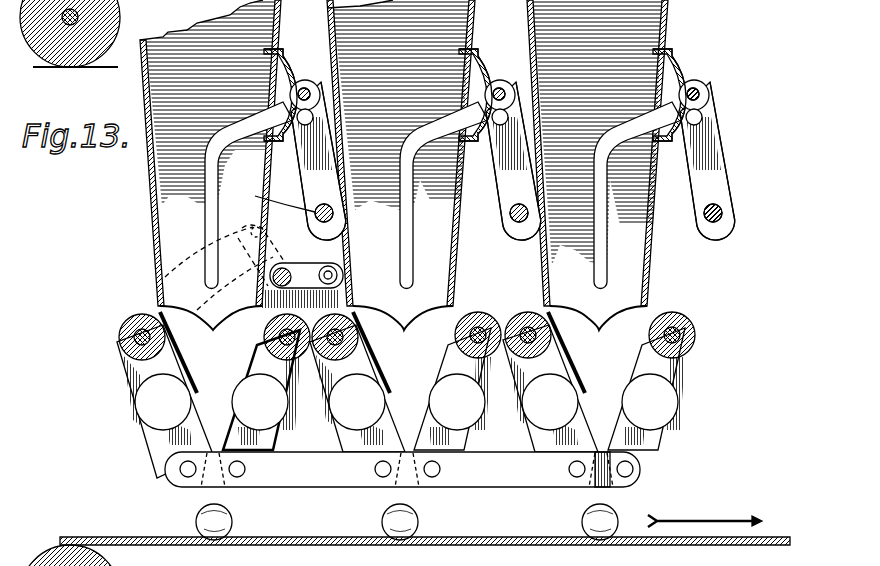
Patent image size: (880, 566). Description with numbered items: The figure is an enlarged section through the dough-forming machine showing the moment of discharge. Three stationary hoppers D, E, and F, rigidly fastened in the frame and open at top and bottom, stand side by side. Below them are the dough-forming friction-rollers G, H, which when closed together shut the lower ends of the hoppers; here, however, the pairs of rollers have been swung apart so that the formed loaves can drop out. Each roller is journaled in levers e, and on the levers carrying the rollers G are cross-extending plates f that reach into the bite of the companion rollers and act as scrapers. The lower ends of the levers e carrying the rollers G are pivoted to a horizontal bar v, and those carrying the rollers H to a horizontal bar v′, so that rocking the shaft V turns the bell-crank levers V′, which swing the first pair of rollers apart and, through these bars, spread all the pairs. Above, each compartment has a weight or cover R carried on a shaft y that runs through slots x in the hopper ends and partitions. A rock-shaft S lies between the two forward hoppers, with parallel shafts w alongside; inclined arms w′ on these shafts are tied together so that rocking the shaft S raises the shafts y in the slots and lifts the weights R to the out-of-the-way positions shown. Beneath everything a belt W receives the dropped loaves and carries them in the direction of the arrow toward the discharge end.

The hopper D is at (210, 153).
The hopper E is at (401, 153).
The hopper F is at (597, 153).
The weight or cover R is at (283, 74).
The shaft y is at (311, 94).
The slot x is at (203, 176).
The inclined arm w′ is at (740, 152).
The shaft w is at (510, 216).
The rock-shaft S is at (273, 195).
The rock-shaft V is at (308, 264).
The bell-crank lever V′ is at (332, 268).
The dough-forming friction-roller G is at (123, 315).
The dough-forming friction-roller H is at (273, 323).
The cross-extending plate f is at (180, 366).
The lever e is at (401, 401).
The horizontal bar v is at (313, 480).
The horizontal bar v′ is at (602, 480).
The belt W is at (436, 547).